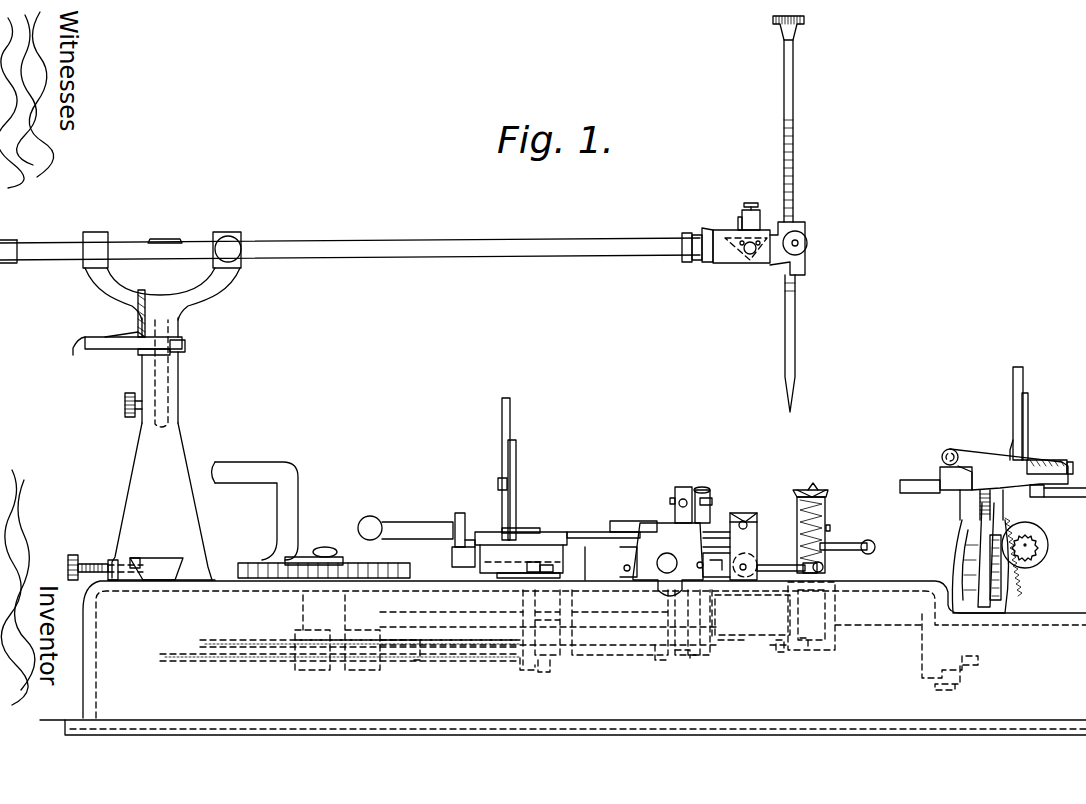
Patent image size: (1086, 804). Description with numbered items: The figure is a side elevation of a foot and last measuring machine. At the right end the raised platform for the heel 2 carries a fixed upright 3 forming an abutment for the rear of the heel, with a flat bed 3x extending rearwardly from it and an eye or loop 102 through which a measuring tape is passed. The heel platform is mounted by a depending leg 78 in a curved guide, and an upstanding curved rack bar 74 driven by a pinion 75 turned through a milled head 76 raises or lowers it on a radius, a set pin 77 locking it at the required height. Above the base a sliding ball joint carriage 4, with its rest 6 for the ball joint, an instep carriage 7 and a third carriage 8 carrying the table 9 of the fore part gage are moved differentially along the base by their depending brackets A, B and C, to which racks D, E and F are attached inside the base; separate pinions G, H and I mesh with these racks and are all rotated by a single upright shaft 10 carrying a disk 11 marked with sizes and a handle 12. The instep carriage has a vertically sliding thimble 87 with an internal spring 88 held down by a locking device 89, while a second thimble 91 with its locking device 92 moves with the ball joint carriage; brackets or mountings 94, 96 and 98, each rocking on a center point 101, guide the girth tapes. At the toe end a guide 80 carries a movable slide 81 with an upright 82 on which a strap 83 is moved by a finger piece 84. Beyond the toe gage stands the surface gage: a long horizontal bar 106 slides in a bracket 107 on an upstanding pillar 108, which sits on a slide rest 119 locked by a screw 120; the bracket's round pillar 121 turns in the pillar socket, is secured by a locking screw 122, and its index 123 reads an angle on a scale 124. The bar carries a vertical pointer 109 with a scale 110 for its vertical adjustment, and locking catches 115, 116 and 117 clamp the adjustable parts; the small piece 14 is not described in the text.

The raised platform for the heel 2 is at (912, 480).
The upright 3 is at (1012, 395).
The flat bed 3x is at (1040, 470).
The ball joint carriage 4 is at (622, 548).
The rest for the ball joint 6 is at (630, 520).
The instep carriage 7 is at (826, 573).
The carriage of the fore part gage 8 is at (512, 583).
The table for the fore part gage 9 is at (480, 550).
The upright shaft 10 is at (325, 547).
The disk 11 is at (316, 578).
The handle 12 is at (268, 468).
The pin 14 is at (168, 240).
The upstanding curved rack bar 74 is at (1010, 527).
The pinion 75 is at (1037, 547).
The milled head 76 is at (1035, 565).
The set pin 77 is at (954, 567).
The depending leg 78 is at (985, 530).
The guide 80 is at (450, 538).
The movable slide 81 is at (405, 527).
The upright 82 is at (516, 466).
The sliding member or strap 83 is at (508, 486).
The finger piece 84 is at (511, 414).
The vertically sliding thimble 87 is at (826, 508).
The internal spring 88 is at (826, 531).
The locking device 89 is at (868, 555).
The second vertically sliding thimble 91 is at (757, 531).
The locking device 92 is at (772, 565).
The bracket or mounting 94 is at (812, 489).
The bracket or mounting 96 is at (750, 512).
The bracket or mounting 98 is at (678, 486).
The center point 101 is at (678, 458).
The eye or loop 102 is at (1013, 455).
The long horizontal bar 106 is at (448, 244).
The bracket 107 is at (137, 293).
The upstanding pillar 108 is at (132, 500).
The vertical pointer 109 is at (797, 352).
The scale 110 is at (796, 196).
The thumbscrew or spring locking catch 115 is at (807, 250).
The thumbscrew or spring locking catch 116 is at (750, 205).
The thumbscrew or spring locking catch 117 is at (232, 246).
The slide rest 119 is at (158, 560).
The screw 120 is at (92, 560).
The round pillar 121 is at (180, 378).
The locking screw 122 is at (124, 407).
The index 123 is at (112, 335).
The scale 124 is at (121, 354).
The depending bracket A is at (668, 606).
The depending bracket B is at (790, 608).
The depending bracket C is at (520, 617).
The rack D is at (222, 660).
The rack E is at (205, 650).
The rack F is at (226, 640).
The pinion G is at (300, 660).
The pinion H is at (352, 646).
The pinion I is at (300, 642).